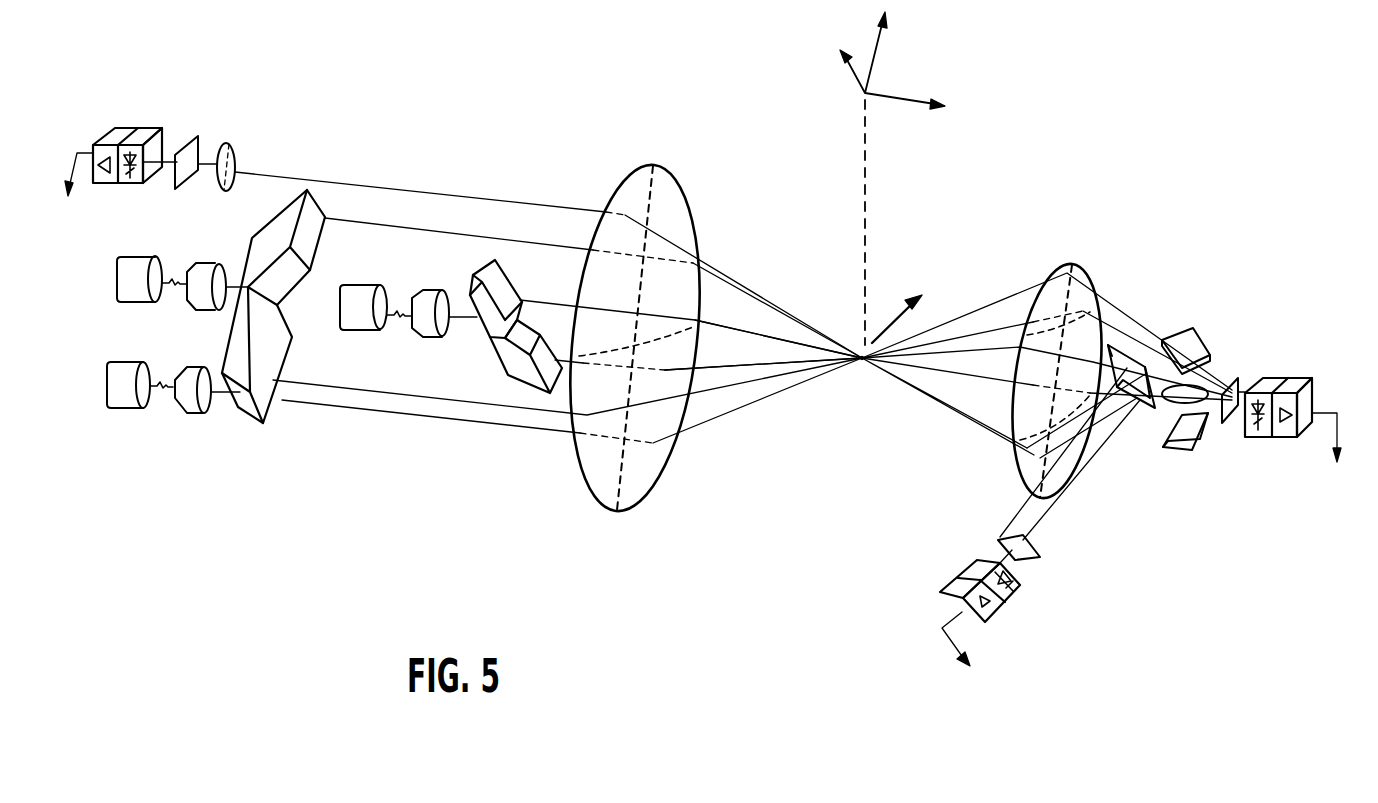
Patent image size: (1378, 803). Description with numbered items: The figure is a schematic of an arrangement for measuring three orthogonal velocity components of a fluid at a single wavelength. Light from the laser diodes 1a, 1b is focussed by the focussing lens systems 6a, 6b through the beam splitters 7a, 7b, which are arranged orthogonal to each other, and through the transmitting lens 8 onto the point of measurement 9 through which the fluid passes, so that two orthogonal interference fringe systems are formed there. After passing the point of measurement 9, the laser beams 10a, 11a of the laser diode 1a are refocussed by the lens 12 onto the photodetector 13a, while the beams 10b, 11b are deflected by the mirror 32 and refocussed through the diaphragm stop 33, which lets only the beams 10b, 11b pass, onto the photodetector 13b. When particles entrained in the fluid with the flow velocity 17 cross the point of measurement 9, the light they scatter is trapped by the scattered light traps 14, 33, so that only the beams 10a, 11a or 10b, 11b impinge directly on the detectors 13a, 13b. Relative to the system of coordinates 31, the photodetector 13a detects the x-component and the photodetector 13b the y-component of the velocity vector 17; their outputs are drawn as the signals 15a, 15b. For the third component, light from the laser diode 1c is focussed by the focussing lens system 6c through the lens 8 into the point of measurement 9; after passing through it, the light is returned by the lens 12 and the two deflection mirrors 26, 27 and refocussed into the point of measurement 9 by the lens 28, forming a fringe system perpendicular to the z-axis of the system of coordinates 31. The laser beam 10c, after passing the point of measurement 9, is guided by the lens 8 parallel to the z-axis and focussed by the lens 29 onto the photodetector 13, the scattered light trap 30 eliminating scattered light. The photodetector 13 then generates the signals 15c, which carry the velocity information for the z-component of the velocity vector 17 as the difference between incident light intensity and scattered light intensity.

The laser diode 1a is at (141, 265).
The laser diode 1b is at (365, 288).
The laser diode 1c is at (123, 400).
The focussing lens system 6a is at (209, 268).
The focussing lens system 6b is at (430, 293).
The focussing lens system 6c is at (190, 412).
The beam splitter 7a is at (293, 212).
The beam splitter 7b is at (495, 258).
The transmitting lens 8 is at (643, 182).
The point of measurement 9 is at (862, 368).
The laser beam 10a is at (548, 243).
The laser beam 10b is at (710, 332).
The laser beam 10c is at (300, 406).
The laser beam 11a is at (406, 398).
The laser beam 11b is at (767, 368).
The lens 12 is at (1063, 268).
The photodetector 13 is at (145, 136).
The photodetector 13a is at (1272, 385).
The photodetector 13b is at (1008, 603).
The scattered light trap 14 is at (1233, 380).
The output signal 15a is at (1335, 457).
The output signal 15b is at (969, 656).
The signals 15c is at (72, 194).
The velocity vector v 17 is at (909, 302).
The mirror 26 is at (1185, 336).
The deflection mirror 27 is at (1183, 451).
The lens 28 is at (1167, 398).
The lens 29 is at (231, 143).
The scattered light trap 30 is at (187, 134).
The system of coordinates 31 is at (860, 93).
The mirror 32 is at (1127, 350).
The diaphragm stop 33 is at (1033, 562).